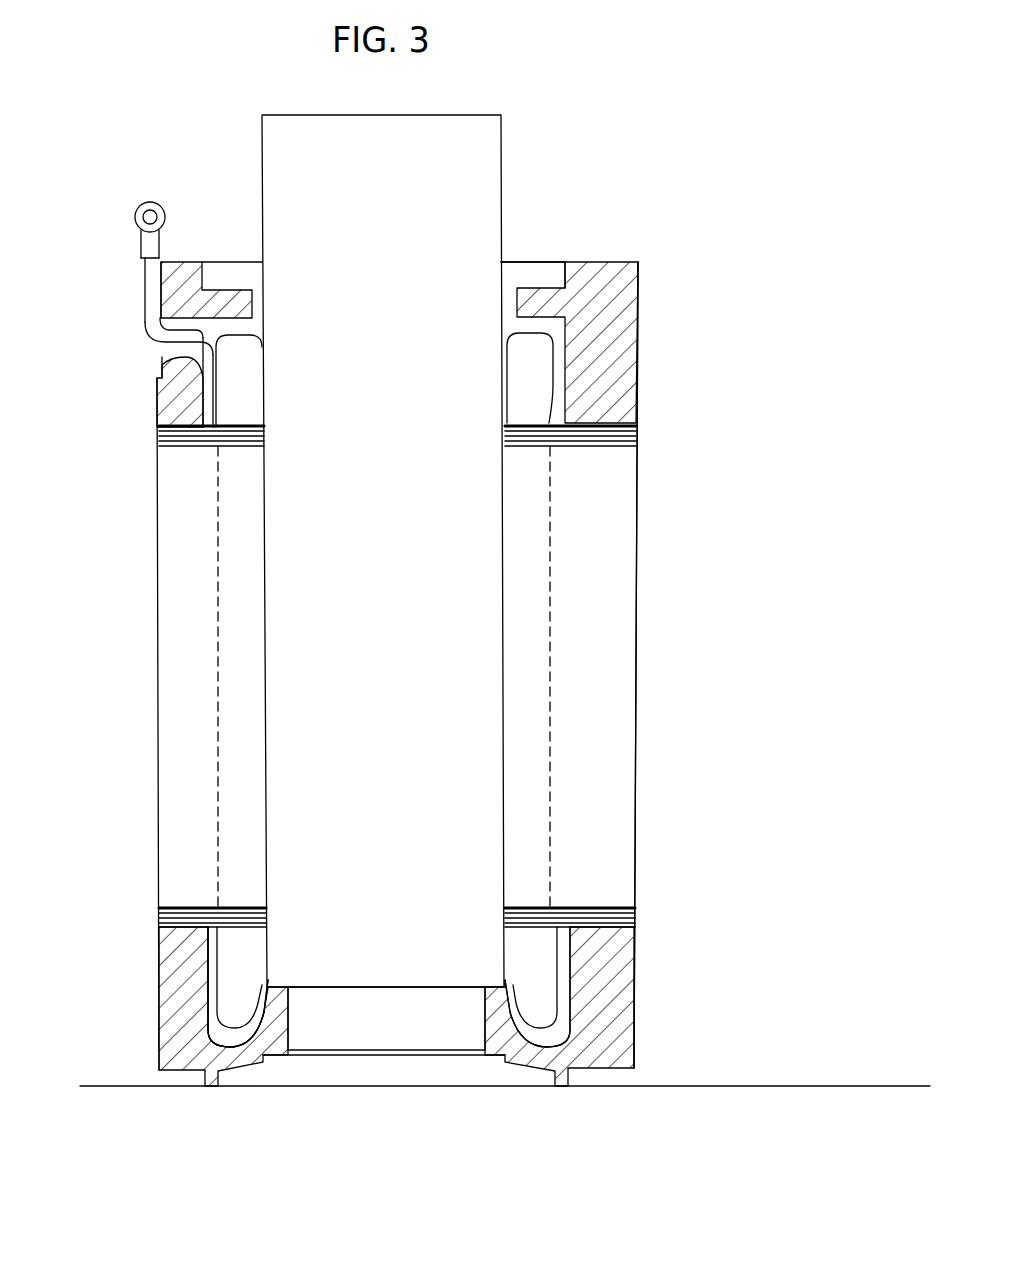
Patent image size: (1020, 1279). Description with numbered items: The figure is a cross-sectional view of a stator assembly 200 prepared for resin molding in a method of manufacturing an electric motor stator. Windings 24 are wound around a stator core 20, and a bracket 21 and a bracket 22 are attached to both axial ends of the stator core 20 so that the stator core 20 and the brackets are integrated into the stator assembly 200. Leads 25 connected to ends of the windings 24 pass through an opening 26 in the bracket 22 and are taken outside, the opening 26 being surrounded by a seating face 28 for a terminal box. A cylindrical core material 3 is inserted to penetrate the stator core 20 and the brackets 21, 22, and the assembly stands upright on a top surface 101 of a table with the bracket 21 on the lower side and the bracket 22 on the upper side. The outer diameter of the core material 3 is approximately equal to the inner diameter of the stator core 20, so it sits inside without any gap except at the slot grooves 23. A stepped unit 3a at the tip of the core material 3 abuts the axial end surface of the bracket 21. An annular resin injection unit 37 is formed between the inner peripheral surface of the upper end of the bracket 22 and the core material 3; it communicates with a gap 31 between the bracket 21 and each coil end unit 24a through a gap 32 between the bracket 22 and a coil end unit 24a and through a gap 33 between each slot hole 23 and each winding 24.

The core material 3 is at (478, 812).
The stepped unit 3a is at (262, 1060).
The stator core 20 is at (636, 528).
The stator assembly 200 is at (650, 596).
The bracket 21 is at (638, 985).
The bracket 22 is at (640, 328).
The slot groove 23 is at (550, 738).
The winding 24 is at (522, 673).
The coil end unit 24a is at (530, 378).
The lead 25 is at (148, 296).
The opening 26 is at (162, 357).
The seating face 28 is at (160, 410).
The gap 31 is at (212, 978).
The gap 32 is at (212, 400).
The gap 33 is at (237, 634).
The resin injection unit 37 is at (535, 270).
The top surface 101 is at (683, 1085).